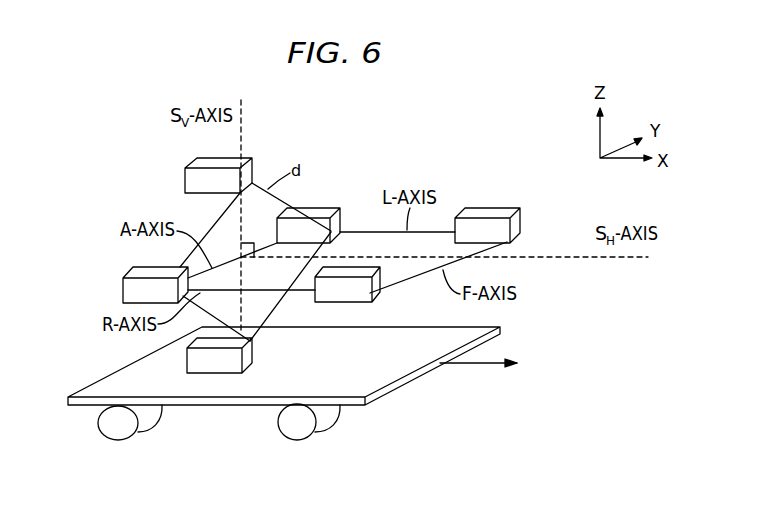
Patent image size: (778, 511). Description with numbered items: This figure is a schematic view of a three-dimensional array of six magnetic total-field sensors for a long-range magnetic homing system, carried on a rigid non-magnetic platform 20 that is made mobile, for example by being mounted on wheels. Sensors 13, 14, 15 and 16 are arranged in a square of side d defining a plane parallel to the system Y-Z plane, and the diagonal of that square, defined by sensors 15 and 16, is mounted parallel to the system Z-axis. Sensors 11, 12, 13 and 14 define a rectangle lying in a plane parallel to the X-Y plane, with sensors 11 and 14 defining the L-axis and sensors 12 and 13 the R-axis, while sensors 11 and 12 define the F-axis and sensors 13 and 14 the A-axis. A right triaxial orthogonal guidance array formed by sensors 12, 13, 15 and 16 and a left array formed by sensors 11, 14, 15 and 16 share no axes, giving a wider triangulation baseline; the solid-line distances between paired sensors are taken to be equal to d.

The total-field sensor 11 is at (497, 208).
The total-field sensor 12 is at (375, 288).
The total-field sensor 13 is at (123, 290).
The total-field sensor 14 is at (325, 208).
The total-field sensor 15 is at (248, 358).
The total-field sensor 16 is at (185, 178).
The platform 20 is at (77, 407).